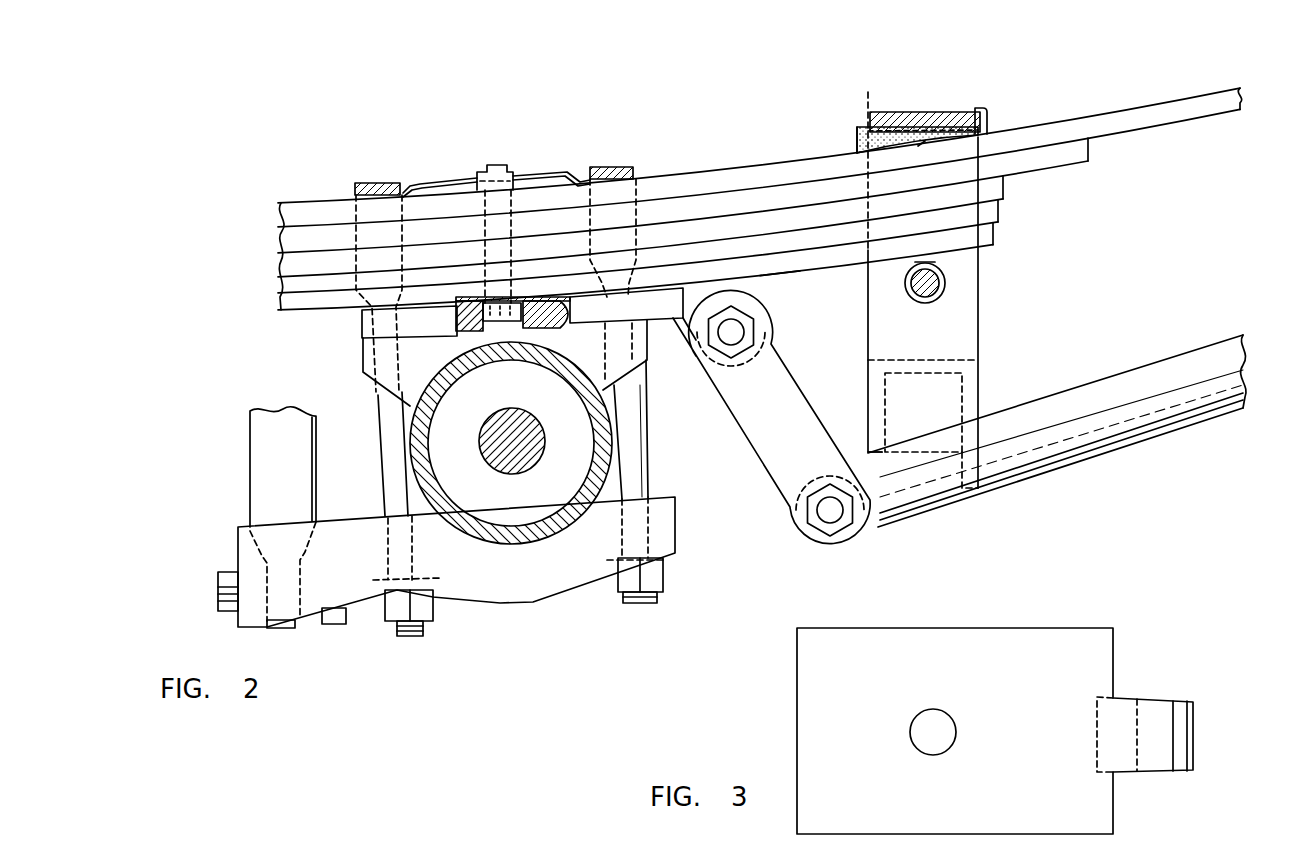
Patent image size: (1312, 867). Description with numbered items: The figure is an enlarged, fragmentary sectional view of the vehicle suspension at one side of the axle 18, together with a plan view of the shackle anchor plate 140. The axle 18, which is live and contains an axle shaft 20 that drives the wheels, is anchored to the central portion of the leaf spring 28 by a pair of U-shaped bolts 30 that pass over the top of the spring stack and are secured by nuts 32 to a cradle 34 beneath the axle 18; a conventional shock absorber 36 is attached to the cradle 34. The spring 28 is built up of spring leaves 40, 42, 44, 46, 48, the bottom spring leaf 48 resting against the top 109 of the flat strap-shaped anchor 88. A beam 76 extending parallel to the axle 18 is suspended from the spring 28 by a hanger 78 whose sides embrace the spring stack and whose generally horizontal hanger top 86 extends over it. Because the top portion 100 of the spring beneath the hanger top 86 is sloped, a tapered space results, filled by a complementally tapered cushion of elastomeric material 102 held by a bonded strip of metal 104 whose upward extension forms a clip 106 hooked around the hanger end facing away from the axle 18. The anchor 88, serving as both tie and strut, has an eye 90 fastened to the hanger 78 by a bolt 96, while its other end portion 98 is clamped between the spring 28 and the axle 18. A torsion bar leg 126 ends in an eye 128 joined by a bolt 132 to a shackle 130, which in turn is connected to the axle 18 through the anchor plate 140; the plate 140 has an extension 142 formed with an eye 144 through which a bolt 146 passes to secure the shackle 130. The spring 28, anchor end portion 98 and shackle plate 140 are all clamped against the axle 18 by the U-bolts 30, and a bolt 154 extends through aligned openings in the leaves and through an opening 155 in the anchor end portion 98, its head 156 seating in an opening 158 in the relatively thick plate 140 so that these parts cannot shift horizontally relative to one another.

In FIG. 2, the axle 18 is at (486, 525).
In FIG. 2, the axle shaft 20 is at (512, 462).
In FIG. 2, the leaf spring 28 is at (703, 170).
In FIG. 2, the U-shaped bolt 30 is at (385, 402).
In FIG. 2, the nut 32 is at (390, 611).
In FIG. 2, the cradle 34 is at (536, 594).
In FIG. 2, the shock absorber 36 is at (250, 468).
In FIG. 2, the spring leaf 40 is at (290, 212).
In FIG. 2, the spring leaf 42 is at (280, 236).
In FIG. 2, the spring leaf 44 is at (280, 258).
In FIG. 2, the spring leaf 46 is at (280, 283).
In FIG. 2, the bottom spring leaf 48 is at (278, 308).
In FIG. 2, the beam 76 is at (975, 388).
In FIG. 2, the hanger 78 is at (990, 347).
In FIG. 2, the hanger top 86 is at (917, 112).
In FIG. 2, the anchor 88 is at (789, 280).
In FIG. 2, the eye 90 is at (927, 300).
In FIG. 2, the bolt 96 is at (957, 285).
In FIG. 2, the end portion of anchor 98 is at (413, 309).
In FIG. 2, the top portion of spring 100 is at (918, 146).
In FIG. 2, the cushion of elastomeric material 102 is at (857, 136).
In FIG. 2, the strip of metal 104 is at (862, 125).
In FIG. 2, the clip 106 is at (990, 110).
In FIG. 2, the top of anchor 109 is at (928, 262).
In FIG. 2, the leg 126 is at (1172, 420).
In FIG. 2, the eye 128 is at (791, 526).
In FIG. 2, the shackle 130 is at (810, 405).
In FIG. 2, the bolt 132 is at (826, 520).
In FIG. 2, the anchor plate 140 is at (597, 318).
In FIG. 3, the anchor plate 140 is at (1005, 629).
In FIG. 2, the extension 142 is at (693, 318).
In FIG. 3, the extension 142 is at (1118, 698).
In FIG. 2, the eye 144 is at (756, 370).
In FIG. 3, the eye 144 is at (1196, 708).
In FIG. 2, the bolt 146 is at (742, 332).
In FIG. 2, the bolt 154 is at (500, 164).
In FIG. 2, the opening 155 is at (488, 300).
In FIG. 2, the bolt head 156 is at (540, 305).
In FIG. 2, the opening 158 is at (475, 322).
In FIG. 3, the opening 158 is at (918, 746).